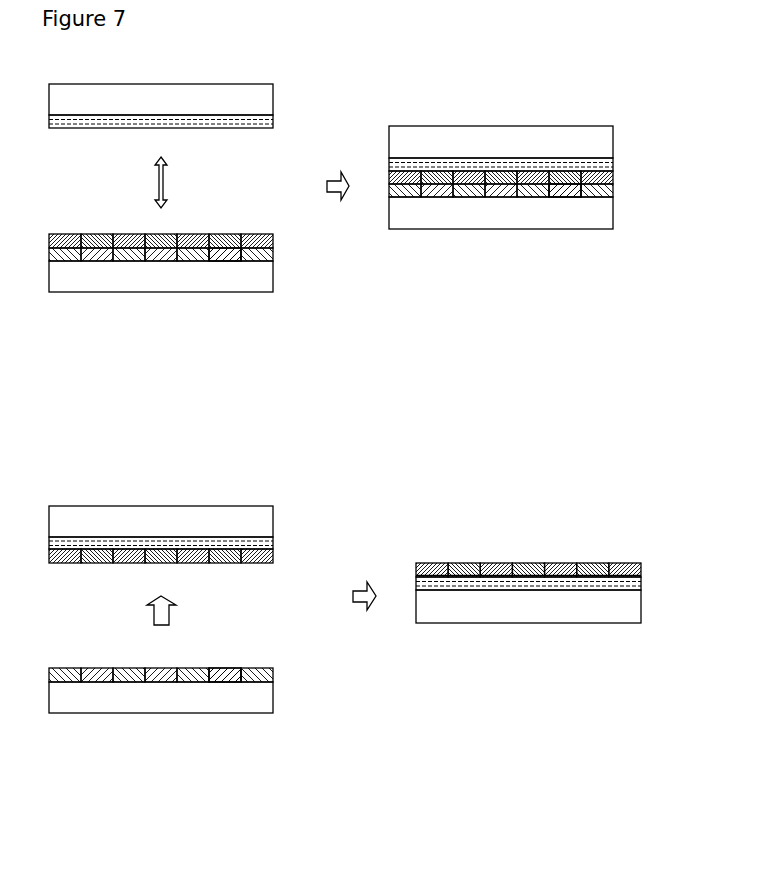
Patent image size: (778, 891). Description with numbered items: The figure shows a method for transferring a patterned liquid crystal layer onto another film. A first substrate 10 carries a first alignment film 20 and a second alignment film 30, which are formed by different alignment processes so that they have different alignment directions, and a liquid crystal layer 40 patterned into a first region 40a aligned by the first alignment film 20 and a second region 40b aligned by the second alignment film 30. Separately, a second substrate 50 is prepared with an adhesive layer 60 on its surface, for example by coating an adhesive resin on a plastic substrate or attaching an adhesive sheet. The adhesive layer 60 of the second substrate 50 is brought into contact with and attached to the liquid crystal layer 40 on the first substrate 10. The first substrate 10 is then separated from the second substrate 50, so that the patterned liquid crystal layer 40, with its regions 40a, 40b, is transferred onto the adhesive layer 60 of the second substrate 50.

The substrate 10 is at (272, 278).
The first alignment film 20 is at (351, 426).
The second alignment film 30 is at (226, 262).
The liquid crystal layer 40 is at (268, 556).
The first region 40a is at (58, 262).
The second region 40b is at (100, 262).
The second substrate 50 is at (268, 98).
The adhesive layer 60 is at (268, 122).